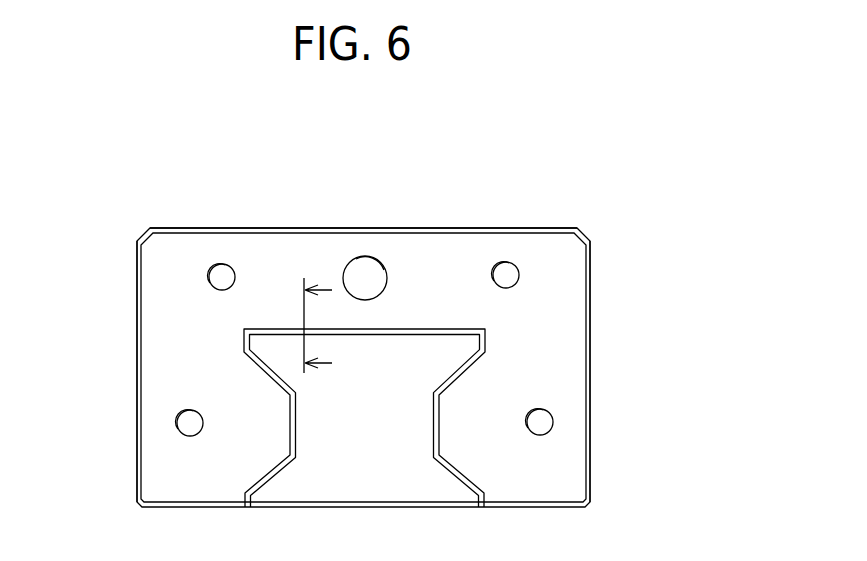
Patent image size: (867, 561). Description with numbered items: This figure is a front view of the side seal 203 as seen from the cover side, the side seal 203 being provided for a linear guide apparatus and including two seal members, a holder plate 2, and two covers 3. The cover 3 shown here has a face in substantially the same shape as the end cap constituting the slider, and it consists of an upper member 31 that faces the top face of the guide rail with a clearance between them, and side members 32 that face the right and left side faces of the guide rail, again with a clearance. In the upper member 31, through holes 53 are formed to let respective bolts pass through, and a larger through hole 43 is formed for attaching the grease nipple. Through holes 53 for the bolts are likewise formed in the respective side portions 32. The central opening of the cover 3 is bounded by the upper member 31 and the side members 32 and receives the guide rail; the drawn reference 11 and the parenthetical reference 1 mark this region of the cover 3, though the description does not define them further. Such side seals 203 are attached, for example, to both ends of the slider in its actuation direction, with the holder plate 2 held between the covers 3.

The side seal 203 is at (170, 218).
The holder plate 2 is at (567, 223).
The cover 3 is at (581, 259).
The upper member 31 is at (439, 262).
The side member 32 is at (172, 360).
The through hole 53 is at (222, 264).
The through hole for grease nipple 43 is at (378, 256).
The slot 11 is at (297, 428).
The slot (alternative designation) 1 is at (364, 418).